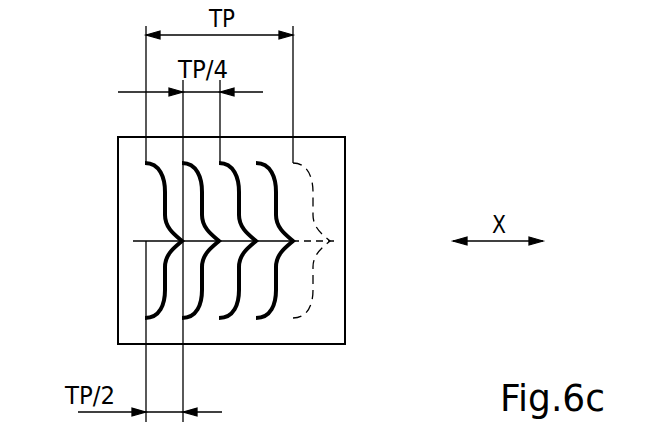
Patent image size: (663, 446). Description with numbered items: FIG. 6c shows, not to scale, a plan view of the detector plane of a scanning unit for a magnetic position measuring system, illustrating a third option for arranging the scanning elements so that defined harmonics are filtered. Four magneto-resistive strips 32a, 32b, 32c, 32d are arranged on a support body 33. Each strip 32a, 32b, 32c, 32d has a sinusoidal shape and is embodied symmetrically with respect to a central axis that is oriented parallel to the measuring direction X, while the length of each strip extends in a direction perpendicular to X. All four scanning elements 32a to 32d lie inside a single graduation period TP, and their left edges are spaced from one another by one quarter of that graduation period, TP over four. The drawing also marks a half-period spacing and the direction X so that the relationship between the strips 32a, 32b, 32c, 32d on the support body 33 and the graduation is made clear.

The magneto-resistive strip 32a is at (146, 318).
The magneto-resistive strip 32b is at (185, 318).
The magneto-resistive strip 32c is at (222, 318).
The magneto-resistive strip 32d is at (258, 318).
The support body 33 is at (335, 312).